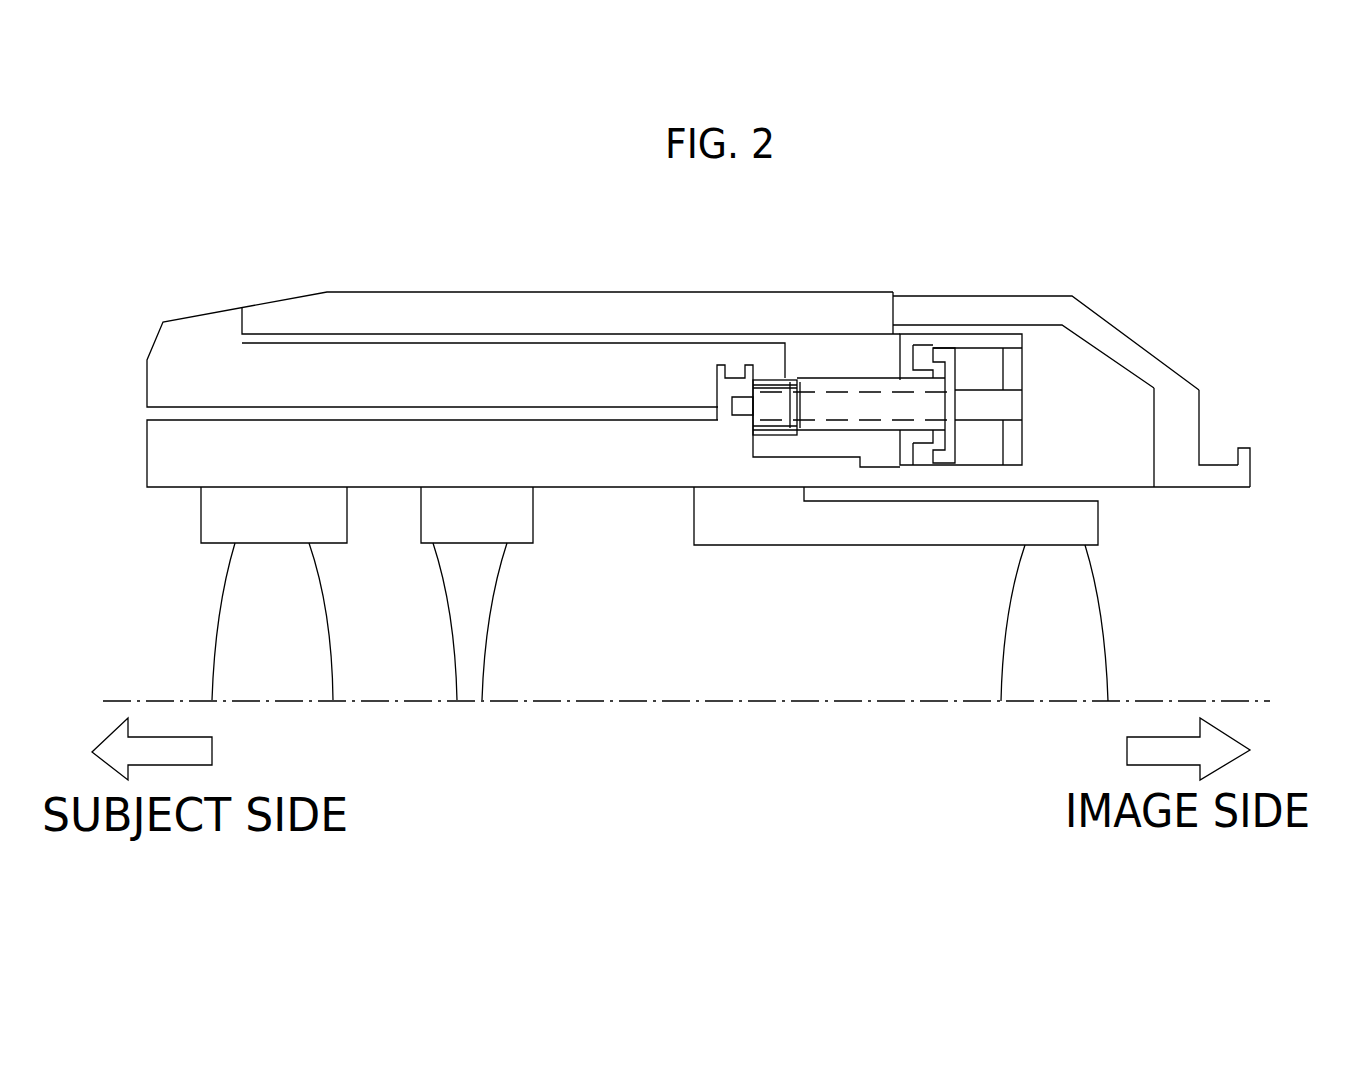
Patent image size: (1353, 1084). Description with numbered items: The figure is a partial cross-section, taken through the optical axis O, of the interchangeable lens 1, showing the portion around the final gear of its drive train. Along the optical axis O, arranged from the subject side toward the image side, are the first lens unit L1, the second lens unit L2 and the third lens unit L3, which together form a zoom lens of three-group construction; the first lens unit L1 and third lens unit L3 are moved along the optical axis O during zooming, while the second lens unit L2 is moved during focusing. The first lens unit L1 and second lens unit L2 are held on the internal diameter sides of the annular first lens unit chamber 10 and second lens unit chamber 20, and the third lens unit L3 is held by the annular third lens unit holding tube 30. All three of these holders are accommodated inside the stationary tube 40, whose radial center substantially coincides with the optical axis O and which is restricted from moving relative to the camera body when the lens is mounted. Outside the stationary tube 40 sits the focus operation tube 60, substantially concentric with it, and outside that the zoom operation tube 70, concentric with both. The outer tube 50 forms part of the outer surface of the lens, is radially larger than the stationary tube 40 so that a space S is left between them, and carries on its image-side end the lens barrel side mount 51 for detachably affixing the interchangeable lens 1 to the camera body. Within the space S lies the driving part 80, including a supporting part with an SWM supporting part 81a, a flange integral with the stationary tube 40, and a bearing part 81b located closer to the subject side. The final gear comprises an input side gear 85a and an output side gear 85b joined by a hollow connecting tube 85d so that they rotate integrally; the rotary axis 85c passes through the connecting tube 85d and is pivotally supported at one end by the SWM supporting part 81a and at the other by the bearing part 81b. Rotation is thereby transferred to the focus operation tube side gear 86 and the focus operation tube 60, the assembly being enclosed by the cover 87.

The interchangeable lens 1 is at (1173, 262).
The first lens unit chamber 10 is at (247, 627).
The second lens unit chamber 20 is at (505, 627).
The third lens unit holding tube 30 is at (941, 627).
The stationary tube 40 is at (158, 453).
The outer tube 50 is at (1182, 424).
The lens barrel side mount 51 is at (1242, 478).
The focus operation tube 60 is at (192, 323).
The zoom operation tube 70 is at (862, 320).
The driving part 80 is at (913, 322).
The SWM supporting part 81a is at (1015, 378).
The bearing part 81b is at (725, 393).
The input side gear 85a is at (958, 350).
The output side gear 85b is at (780, 380).
The rotary axis 85c is at (1013, 407).
The connecting tube 85d is at (842, 383).
The focus operation tube side gear 86 is at (750, 363).
The cover 87 is at (979, 350).
The space S is at (1050, 342).
The optical axis O is at (672, 700).
The first lens unit L1 is at (282, 662).
The second lens unit L2 is at (472, 662).
The third lens unit L3 is at (1048, 665).